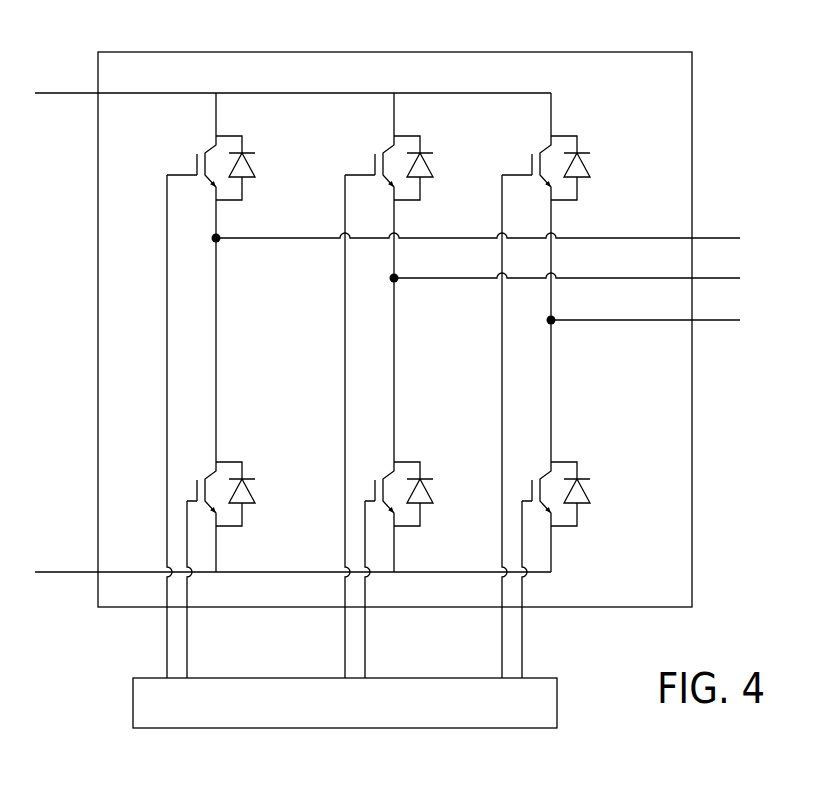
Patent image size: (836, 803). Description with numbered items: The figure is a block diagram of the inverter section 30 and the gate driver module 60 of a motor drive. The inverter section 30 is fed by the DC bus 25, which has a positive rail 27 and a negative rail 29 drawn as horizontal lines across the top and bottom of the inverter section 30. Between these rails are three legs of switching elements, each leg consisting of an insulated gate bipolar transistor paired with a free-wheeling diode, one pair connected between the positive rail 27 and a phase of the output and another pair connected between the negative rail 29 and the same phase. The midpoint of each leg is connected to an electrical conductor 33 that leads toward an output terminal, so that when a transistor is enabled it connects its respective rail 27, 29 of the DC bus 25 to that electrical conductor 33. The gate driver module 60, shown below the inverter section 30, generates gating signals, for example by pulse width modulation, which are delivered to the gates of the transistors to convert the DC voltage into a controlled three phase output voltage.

The DC bus 25 is at (79, 102).
The positive rail 27 is at (67, 92).
The negative rail 29 is at (62, 576).
The inverter section 30 is at (500, 52).
The electrical conductor 33 is at (716, 230).
The gate driver module 60 is at (236, 729).